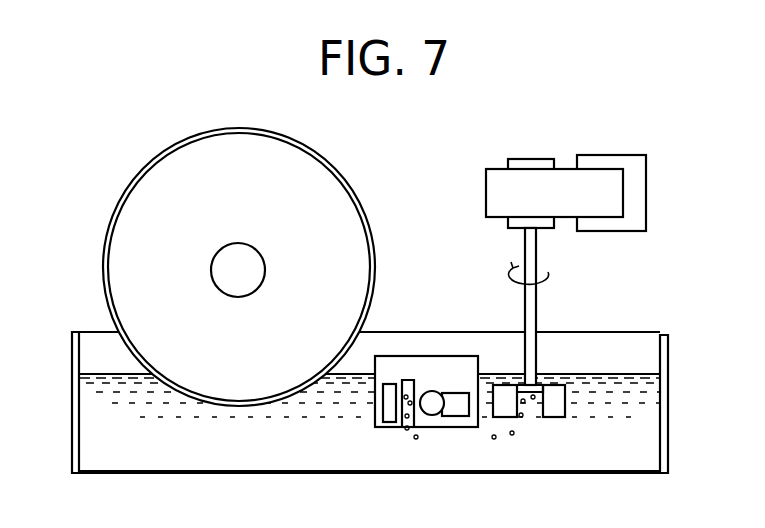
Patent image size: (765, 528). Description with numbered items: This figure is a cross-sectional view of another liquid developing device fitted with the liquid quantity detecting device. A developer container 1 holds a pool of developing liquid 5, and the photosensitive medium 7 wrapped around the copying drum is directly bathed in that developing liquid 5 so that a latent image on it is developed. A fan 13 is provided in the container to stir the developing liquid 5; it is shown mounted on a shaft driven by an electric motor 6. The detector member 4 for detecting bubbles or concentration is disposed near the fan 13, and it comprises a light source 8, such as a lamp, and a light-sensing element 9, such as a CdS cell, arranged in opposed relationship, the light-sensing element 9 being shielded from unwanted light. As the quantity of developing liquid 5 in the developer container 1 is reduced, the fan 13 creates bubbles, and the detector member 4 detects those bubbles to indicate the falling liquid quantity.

The developer container 1 is at (668, 430).
The detector member 4 is at (435, 356).
The developing liquid 5 is at (257, 458).
The electric motor 6 is at (535, 159).
The photosensitive medium 7 is at (103, 293).
The light source 8 is at (453, 405).
The light-sensing element 9 is at (388, 412).
The fan 13 is at (553, 418).